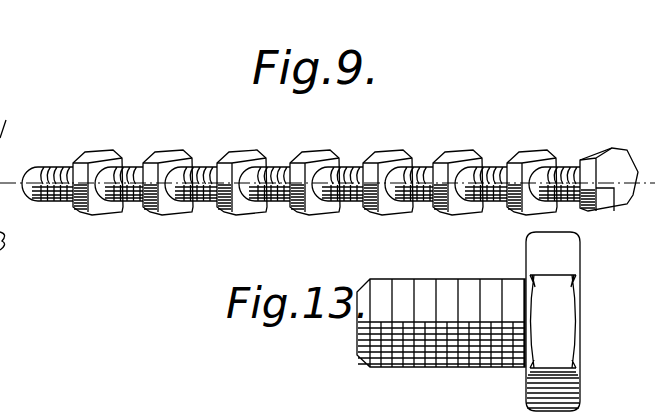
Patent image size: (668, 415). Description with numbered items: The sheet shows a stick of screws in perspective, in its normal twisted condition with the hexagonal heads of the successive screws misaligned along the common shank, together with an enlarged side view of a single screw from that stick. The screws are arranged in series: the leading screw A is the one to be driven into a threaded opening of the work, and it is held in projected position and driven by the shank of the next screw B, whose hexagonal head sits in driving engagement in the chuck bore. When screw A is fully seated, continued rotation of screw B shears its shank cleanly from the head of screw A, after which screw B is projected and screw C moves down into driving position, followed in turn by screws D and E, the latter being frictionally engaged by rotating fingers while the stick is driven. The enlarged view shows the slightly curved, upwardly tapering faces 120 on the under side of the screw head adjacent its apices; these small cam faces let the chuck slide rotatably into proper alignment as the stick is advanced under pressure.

In FIG. 9, the leading screw A is at (85, 209).
In FIG. 9, the second screw B is at (155, 209).
In FIG. 9, the screw C is at (229, 209).
In FIG. 9, the screw D is at (302, 209).
In FIG. 9, the screw E is at (375, 209).
In FIG. 13, the curved tapering faces 120 is at (527, 370).